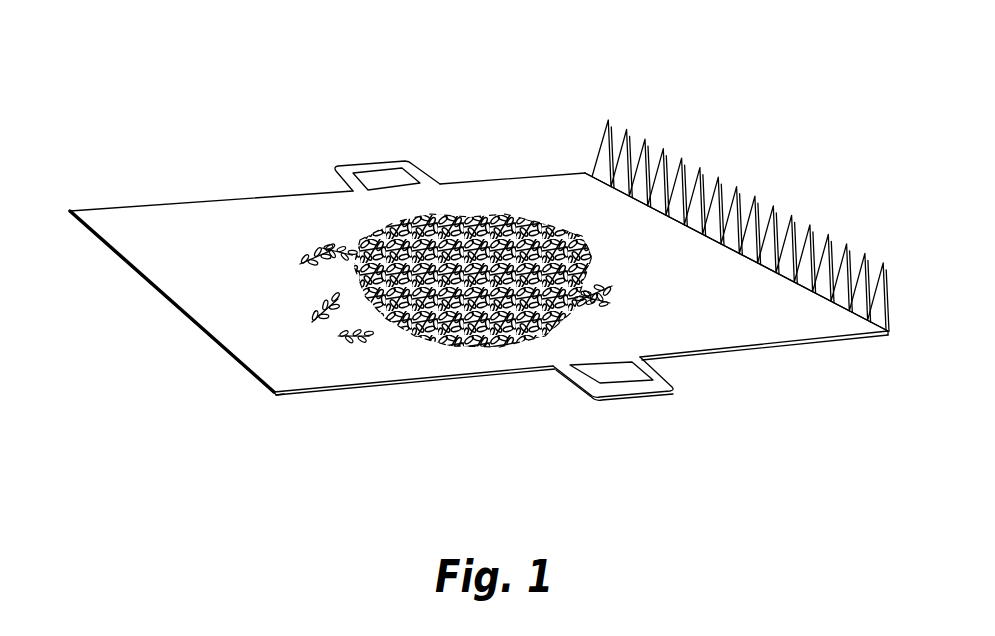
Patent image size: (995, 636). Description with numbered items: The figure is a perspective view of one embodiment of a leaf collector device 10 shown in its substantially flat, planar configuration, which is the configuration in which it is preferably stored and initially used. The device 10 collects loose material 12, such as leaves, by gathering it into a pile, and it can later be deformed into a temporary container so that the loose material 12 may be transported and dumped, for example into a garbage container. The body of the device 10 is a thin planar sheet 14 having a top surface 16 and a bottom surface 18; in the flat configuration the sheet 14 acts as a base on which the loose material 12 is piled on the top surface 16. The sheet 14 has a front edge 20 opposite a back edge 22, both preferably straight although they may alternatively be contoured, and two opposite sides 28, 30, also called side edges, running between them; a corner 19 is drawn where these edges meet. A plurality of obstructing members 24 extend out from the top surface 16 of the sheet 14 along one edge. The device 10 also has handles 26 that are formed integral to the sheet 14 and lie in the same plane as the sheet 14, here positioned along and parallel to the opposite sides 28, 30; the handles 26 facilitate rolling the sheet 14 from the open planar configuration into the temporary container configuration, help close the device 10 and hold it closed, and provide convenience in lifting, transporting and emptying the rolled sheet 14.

The device 10 is at (333, 85).
The loose material 12 is at (372, 255).
The planar sheet 14 is at (643, 253).
The top surface 16 is at (305, 363).
The bottom surface 18 is at (145, 292).
The corner 19 is at (255, 381).
The front edge 20 is at (193, 357).
The back edge 22 is at (578, 158).
The obstructing members 24 is at (703, 175).
The handles 26 is at (393, 153).
The side 28 is at (277, 145).
The side 30 is at (738, 385).